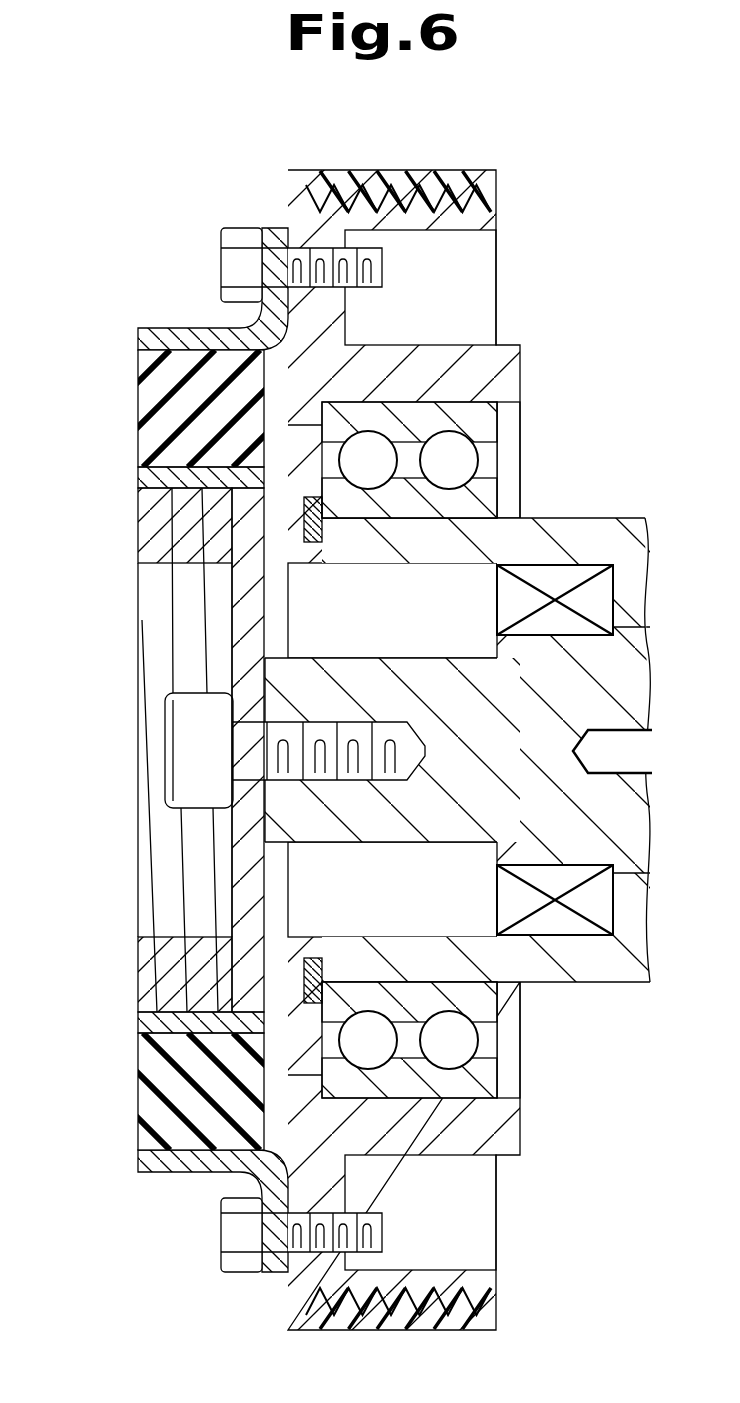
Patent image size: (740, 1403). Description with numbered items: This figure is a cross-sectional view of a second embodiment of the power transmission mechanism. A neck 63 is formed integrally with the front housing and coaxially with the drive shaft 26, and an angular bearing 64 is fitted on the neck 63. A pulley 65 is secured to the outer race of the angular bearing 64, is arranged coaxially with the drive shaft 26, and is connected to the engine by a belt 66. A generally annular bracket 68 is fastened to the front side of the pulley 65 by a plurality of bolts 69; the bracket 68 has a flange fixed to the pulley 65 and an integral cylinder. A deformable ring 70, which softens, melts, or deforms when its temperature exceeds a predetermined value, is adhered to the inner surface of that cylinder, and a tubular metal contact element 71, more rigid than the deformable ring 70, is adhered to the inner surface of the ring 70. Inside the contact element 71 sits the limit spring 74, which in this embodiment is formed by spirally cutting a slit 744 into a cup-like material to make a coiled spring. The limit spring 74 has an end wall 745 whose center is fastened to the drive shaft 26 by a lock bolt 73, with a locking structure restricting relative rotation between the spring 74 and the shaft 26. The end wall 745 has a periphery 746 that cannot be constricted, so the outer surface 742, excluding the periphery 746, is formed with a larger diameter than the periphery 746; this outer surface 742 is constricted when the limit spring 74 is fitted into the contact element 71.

The drive shaft 26 is at (435, 733).
The neck 63 is at (580, 530).
The angular bearing 64 is at (470, 463).
The pulley 65 is at (293, 182).
The belt 66 is at (415, 173).
The bracket 68 is at (247, 327).
The bolts 69 is at (227, 253).
The deformable ring 70 is at (148, 393).
The contact element 71 is at (148, 478).
The lock bolt 73 is at (180, 765).
The limit spring 74 is at (148, 560).
The outer surface 742 is at (168, 490).
The slit 744 is at (207, 610).
The end wall 745 is at (240, 643).
The periphery 746 is at (245, 466).